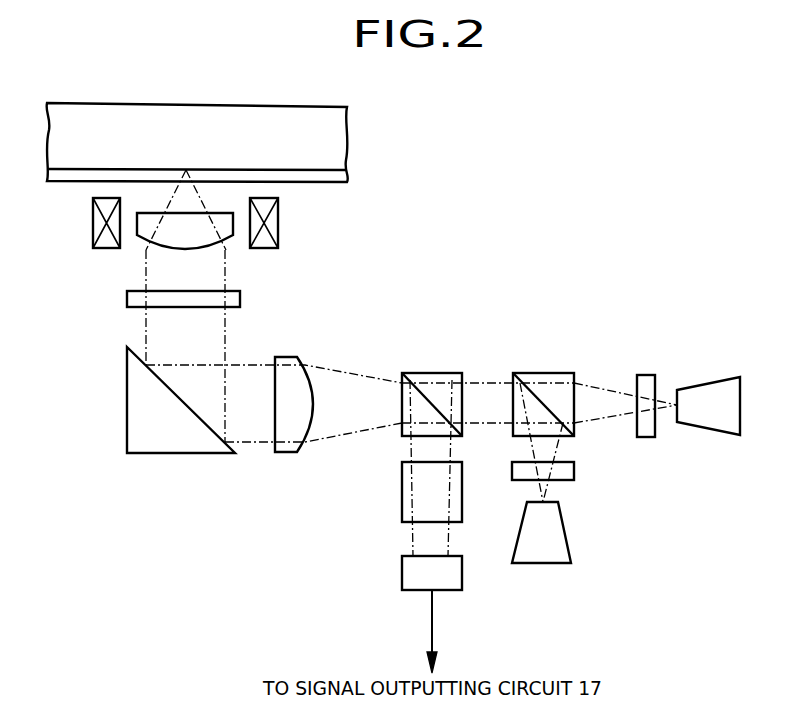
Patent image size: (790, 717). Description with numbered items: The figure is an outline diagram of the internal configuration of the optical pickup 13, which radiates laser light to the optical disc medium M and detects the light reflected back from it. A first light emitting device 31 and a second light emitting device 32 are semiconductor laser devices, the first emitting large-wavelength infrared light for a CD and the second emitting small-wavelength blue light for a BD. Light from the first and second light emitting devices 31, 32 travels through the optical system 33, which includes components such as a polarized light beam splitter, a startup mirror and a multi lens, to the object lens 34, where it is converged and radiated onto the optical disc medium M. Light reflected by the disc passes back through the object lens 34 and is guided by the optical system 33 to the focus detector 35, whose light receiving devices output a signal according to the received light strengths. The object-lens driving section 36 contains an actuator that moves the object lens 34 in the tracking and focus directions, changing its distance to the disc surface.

The optical disc medium M is at (275, 103).
The optical pickup 13 is at (597, 230).
The first light emitting device 31 is at (705, 428).
The second light emitting device 32 is at (538, 563).
The optical system 33 is at (97, 395).
The object lens 34 is at (172, 250).
The focus detector 35 is at (402, 575).
The object-lens driving section 36 is at (93, 232).